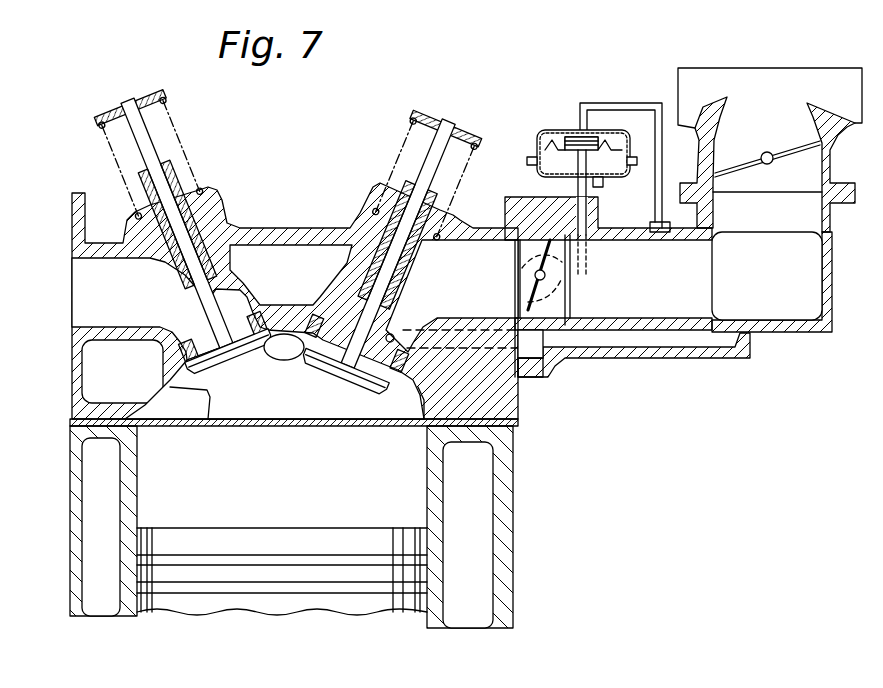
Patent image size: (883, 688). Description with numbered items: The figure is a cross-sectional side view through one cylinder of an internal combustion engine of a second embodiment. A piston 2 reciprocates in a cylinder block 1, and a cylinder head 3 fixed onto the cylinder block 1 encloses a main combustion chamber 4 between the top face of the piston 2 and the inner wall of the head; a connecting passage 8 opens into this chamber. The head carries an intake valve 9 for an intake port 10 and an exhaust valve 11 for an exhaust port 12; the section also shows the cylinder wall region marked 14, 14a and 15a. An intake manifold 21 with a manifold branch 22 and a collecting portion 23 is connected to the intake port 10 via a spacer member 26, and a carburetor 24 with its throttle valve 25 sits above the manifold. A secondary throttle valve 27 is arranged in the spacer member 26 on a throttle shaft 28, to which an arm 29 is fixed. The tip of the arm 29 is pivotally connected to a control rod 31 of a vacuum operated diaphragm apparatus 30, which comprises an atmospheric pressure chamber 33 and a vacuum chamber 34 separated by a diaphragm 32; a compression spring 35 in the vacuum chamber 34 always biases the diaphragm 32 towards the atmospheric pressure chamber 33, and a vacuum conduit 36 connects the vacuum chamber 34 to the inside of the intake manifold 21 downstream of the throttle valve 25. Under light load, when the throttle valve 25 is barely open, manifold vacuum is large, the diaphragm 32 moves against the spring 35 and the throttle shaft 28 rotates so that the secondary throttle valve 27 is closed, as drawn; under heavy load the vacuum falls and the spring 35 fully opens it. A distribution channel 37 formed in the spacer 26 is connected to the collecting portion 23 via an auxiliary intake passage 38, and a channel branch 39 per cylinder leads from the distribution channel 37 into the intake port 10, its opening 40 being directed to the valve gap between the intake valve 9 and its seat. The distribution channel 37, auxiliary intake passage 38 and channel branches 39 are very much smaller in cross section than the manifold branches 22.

The cylinder block 1 is at (500, 587).
The piston 2 is at (363, 607).
The cylinder head 3 is at (507, 390).
The main combustion chamber 4 is at (288, 406).
The connecting passage 8 is at (275, 350).
The intake valve 9 is at (367, 320).
The intake port 10 is at (443, 278).
The exhaust valve 11 is at (222, 206).
The exhaust port 12 is at (92, 306).
The cylinder wall 14 is at (522, 427).
The cylinder wall edge 14a is at (430, 427).
The combustion chamber wall edge 15a is at (213, 402).
The intake manifold 21 is at (628, 212).
The manifold branch 22 is at (641, 289).
The collecting portion 23 is at (754, 281).
The carburetor 24 is at (770, 87).
The throttle valve 25 is at (800, 153).
The spacer member 26 is at (557, 360).
The secondary throttle valve 27 is at (520, 302).
The throttle shaft 28 is at (532, 277).
The arm 29 is at (562, 288).
The vacuum operated diaphragm apparatus 30 is at (594, 164).
The control rod 31 is at (577, 187).
The diaphragm 32 is at (637, 150).
The atmospheric pressure chamber 33 is at (613, 182).
The vacuum chamber 34 is at (550, 137).
The compression spring 35 is at (607, 125).
The vacuum conduit 36 is at (620, 103).
The distribution channel 37 is at (543, 364).
The auxiliary intake passage 38 is at (683, 340).
The channel branch 39 is at (447, 330).
The opening 40 is at (390, 334).